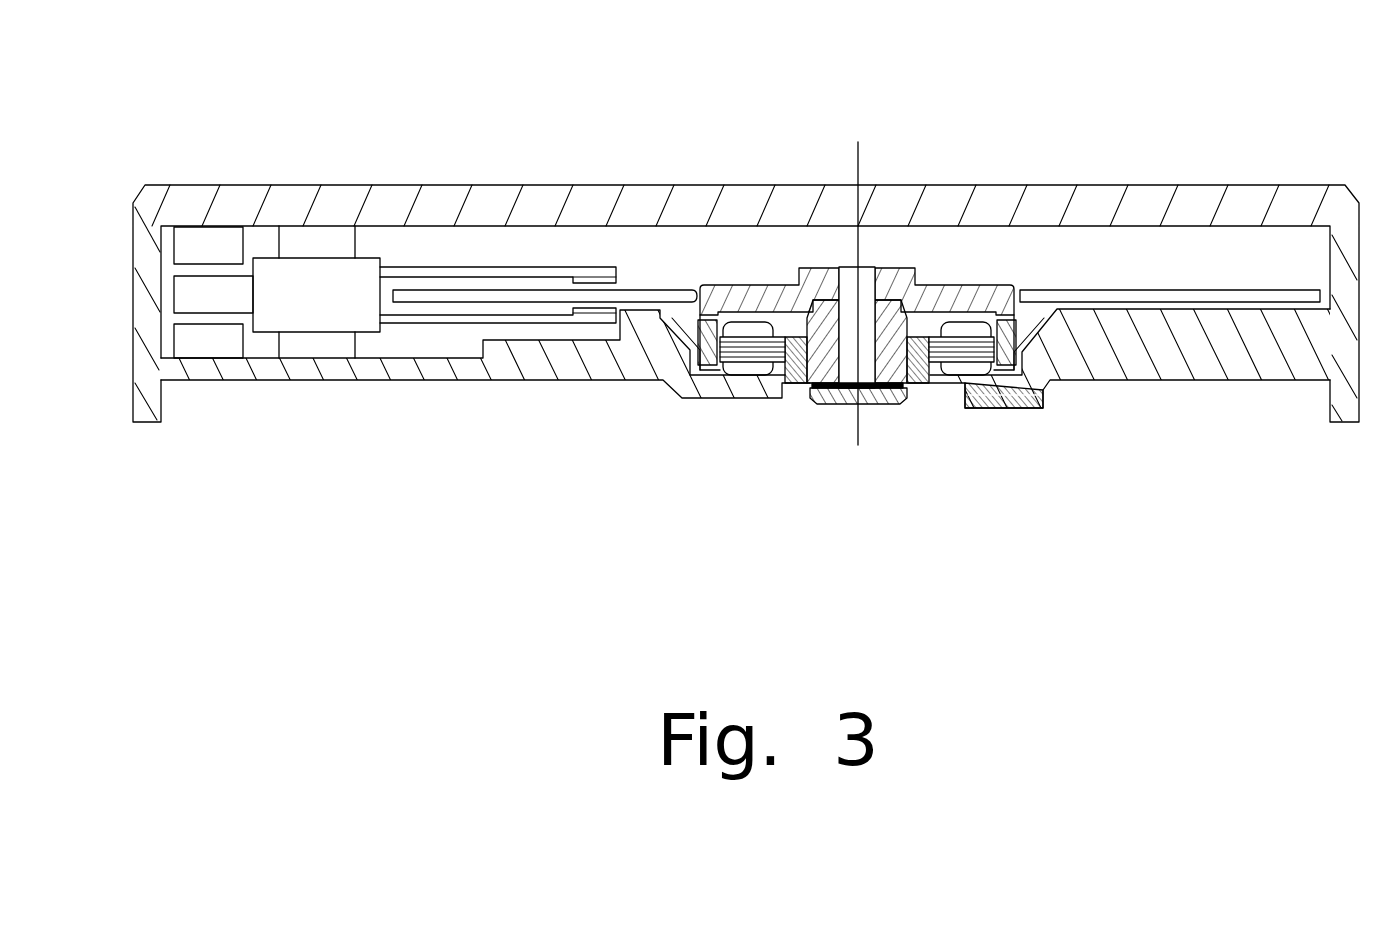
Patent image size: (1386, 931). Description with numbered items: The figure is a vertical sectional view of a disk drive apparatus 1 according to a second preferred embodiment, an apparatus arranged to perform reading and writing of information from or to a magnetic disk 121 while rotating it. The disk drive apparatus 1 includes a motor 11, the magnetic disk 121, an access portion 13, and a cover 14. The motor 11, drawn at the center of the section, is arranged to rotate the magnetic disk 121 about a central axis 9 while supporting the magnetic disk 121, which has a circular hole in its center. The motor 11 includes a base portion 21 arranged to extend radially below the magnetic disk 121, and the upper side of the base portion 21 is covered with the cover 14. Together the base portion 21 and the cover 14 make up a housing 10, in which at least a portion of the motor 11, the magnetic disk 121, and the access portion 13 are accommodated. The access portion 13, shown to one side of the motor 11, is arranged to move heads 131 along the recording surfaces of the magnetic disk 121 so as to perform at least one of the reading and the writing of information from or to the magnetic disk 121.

The disk drive apparatus 1 is at (747, 253).
The central axis 9 is at (855, 158).
The housing 10 is at (233, 184).
The motor 11 is at (775, 249).
The magnetic disk 121 is at (1165, 288).
The access portion 13 is at (498, 215).
The heads 131 is at (590, 280).
The cover 14 is at (450, 206).
The base portion 21 is at (1177, 363).